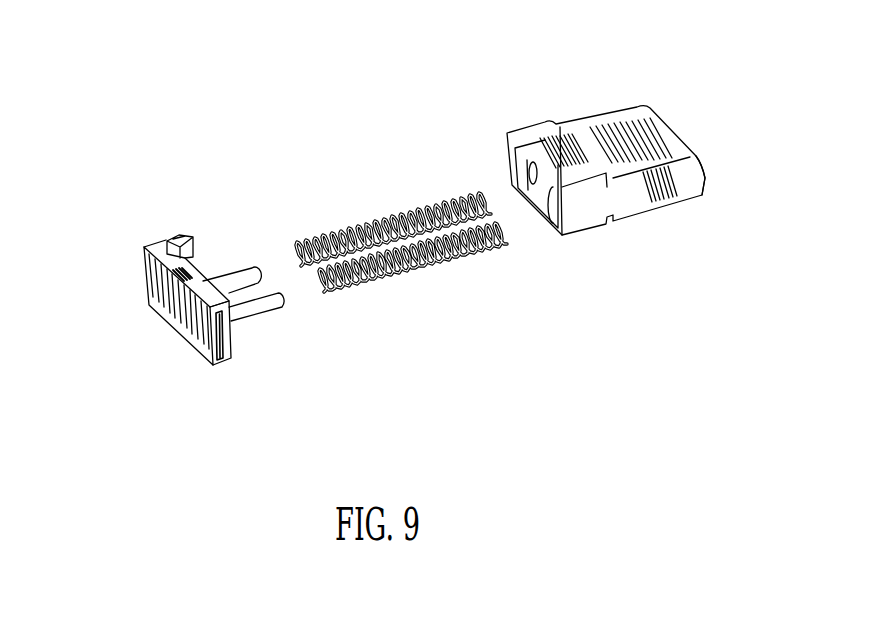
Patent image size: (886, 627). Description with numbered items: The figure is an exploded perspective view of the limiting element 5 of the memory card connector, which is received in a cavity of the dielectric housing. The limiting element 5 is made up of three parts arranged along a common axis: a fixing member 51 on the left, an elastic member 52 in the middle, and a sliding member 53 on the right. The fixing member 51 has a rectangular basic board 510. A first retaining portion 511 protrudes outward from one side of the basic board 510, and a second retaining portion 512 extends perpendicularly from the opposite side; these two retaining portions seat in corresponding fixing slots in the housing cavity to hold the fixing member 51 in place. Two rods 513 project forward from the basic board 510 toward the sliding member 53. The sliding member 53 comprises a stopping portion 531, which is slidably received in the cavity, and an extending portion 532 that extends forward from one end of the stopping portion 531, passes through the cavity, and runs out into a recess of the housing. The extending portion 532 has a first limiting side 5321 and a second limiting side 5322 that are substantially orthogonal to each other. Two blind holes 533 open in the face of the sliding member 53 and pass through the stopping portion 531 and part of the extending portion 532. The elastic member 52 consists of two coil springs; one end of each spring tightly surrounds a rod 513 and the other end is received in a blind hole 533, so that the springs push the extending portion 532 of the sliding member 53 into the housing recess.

The limiting element 5 is at (80, 19).
The fixing member 51 is at (140, 264).
The basic board 510 is at (172, 312).
The first retaining portion 511 is at (232, 349).
The second retaining portion 512 is at (185, 250).
The rods 513 is at (252, 268).
The elastic member 52 is at (378, 214).
The sliding member 53 is at (557, 112).
The stopping portion 531 is at (580, 211).
The extending portion 532 is at (612, 117).
The first limiting side 5321 is at (681, 182).
The second limiting side 5322 is at (703, 153).
The blind holes 533 is at (518, 178).